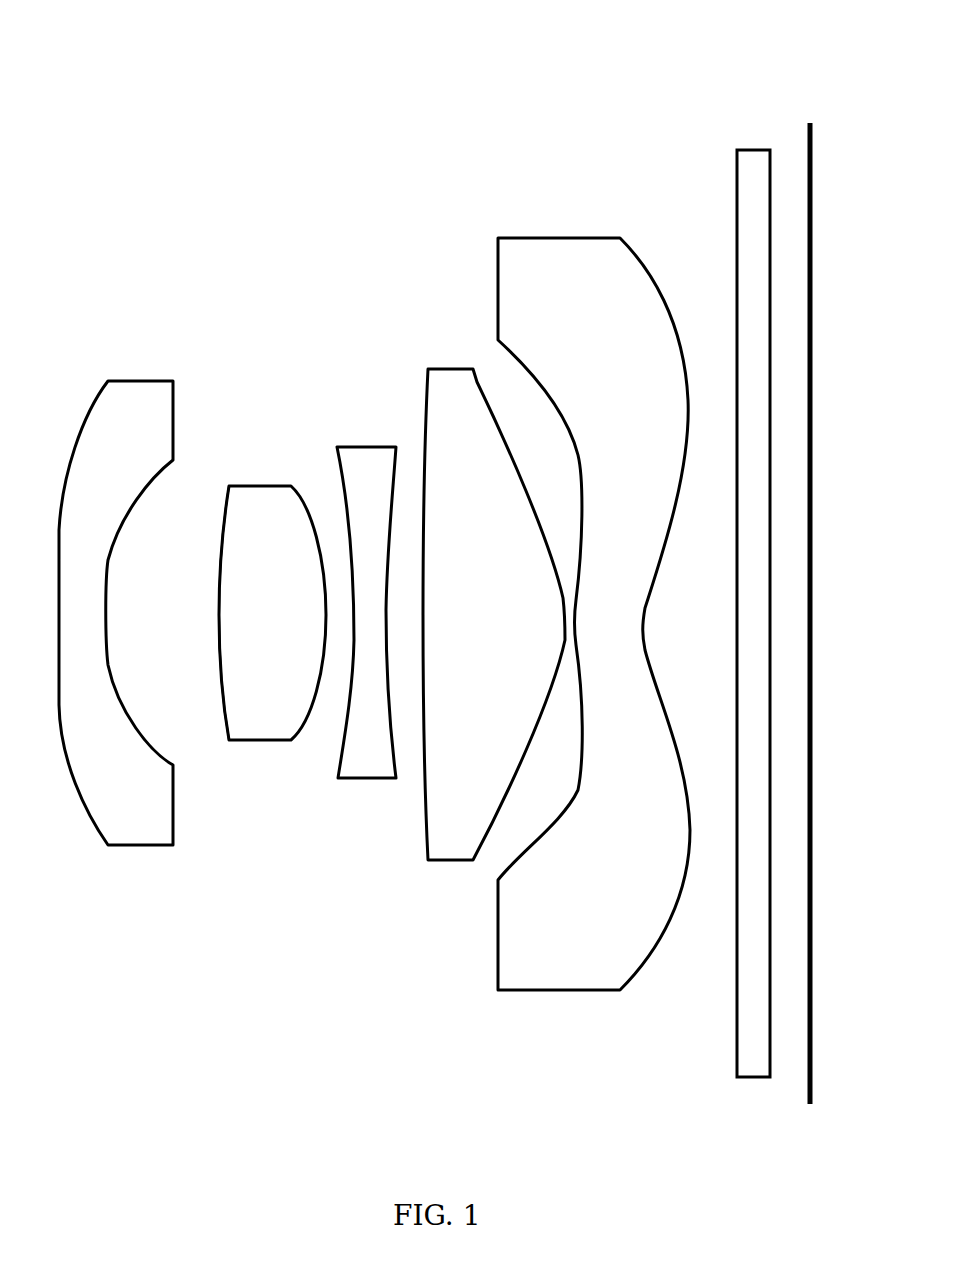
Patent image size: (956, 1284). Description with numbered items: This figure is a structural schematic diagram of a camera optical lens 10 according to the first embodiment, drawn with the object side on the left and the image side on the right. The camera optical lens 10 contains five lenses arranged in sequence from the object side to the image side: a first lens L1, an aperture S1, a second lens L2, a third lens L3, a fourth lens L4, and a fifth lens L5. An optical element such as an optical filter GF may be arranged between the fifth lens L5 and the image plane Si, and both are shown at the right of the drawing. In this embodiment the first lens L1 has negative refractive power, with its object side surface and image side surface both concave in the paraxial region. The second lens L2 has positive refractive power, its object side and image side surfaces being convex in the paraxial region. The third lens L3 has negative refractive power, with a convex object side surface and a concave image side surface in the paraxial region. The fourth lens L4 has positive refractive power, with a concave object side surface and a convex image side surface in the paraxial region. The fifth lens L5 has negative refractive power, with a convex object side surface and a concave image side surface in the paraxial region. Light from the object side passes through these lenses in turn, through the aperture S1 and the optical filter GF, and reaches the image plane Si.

The camera optical lens 10 is at (456, 31).
The first lens L1 is at (116, 598).
The aperture S1 is at (225, 521).
The second lens L2 is at (272, 597).
The third lens L3 is at (366, 599).
The fourth lens L4 is at (494, 601).
The fifth lens L5 is at (594, 600).
The optical filter GF is at (753, 600).
The image plane Si is at (808, 600).